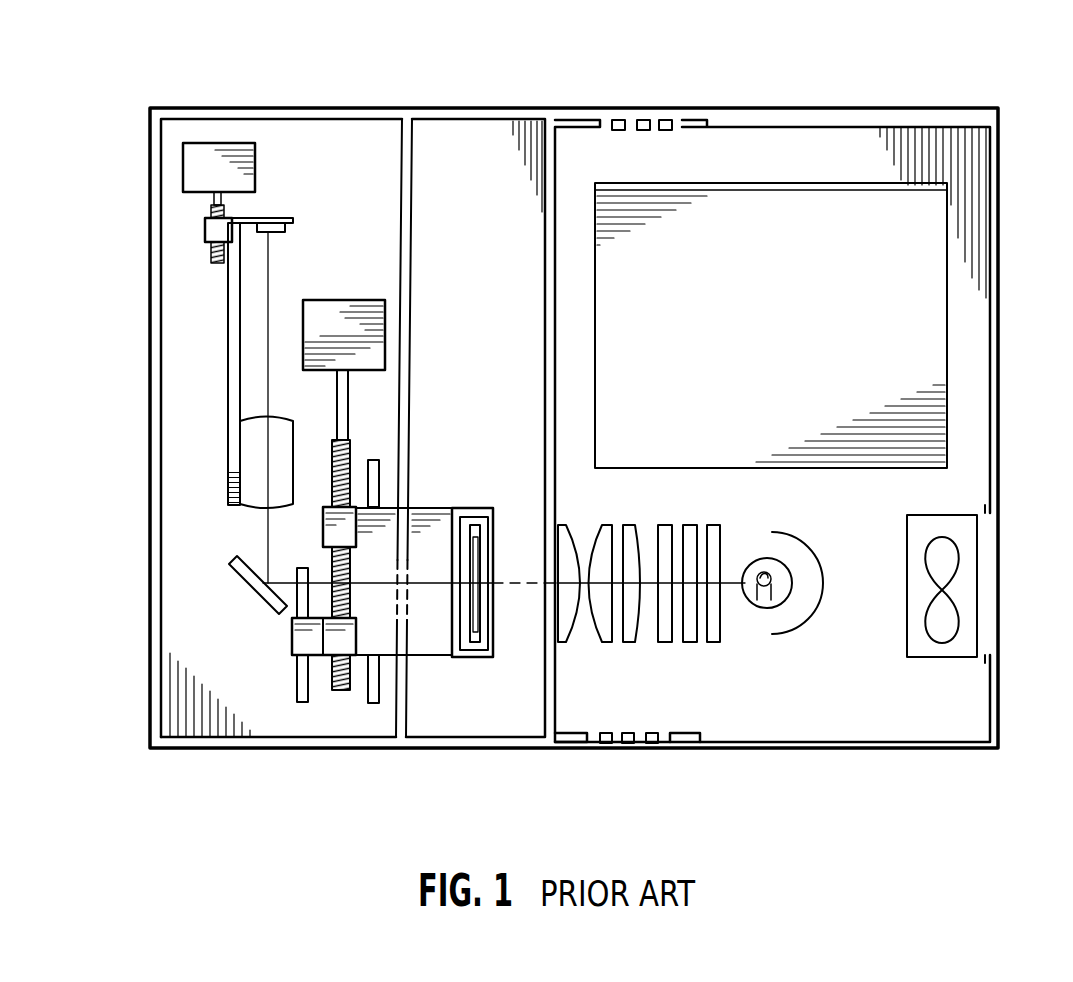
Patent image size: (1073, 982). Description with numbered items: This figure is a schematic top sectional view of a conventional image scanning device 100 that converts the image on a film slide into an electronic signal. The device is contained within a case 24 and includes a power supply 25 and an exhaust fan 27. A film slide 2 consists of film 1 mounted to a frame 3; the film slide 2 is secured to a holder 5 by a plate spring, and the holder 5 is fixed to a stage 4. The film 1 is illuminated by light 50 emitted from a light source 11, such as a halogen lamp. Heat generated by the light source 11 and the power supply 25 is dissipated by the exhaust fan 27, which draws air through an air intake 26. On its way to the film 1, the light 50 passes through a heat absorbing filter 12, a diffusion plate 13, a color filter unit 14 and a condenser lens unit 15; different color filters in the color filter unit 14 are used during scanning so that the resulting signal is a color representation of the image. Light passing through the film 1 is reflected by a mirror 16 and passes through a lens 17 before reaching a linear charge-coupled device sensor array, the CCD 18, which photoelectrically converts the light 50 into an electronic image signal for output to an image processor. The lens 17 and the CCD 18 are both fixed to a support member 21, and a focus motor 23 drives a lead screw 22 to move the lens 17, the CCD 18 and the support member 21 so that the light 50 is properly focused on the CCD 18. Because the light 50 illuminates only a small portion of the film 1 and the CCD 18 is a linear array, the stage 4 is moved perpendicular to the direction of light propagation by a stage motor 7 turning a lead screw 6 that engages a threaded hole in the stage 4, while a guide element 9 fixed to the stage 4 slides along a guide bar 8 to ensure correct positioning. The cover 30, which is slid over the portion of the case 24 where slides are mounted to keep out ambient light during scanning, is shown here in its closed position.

The image scanning device 100 is at (138, 72).
The film 1 is at (477, 548).
The film slide 2 is at (478, 660).
The frame 3 is at (478, 632).
The stage 4 is at (418, 657).
The holder 5 is at (462, 658).
The lead screw 6 is at (336, 692).
The stage motor 7 is at (341, 308).
The guide bar 8 is at (301, 704).
The guide element 9 is at (294, 648).
The light source 11 is at (807, 613).
The heat absorbing filter 12 is at (714, 643).
The diffusion plate 13 is at (690, 643).
The color filter unit 14 is at (665, 643).
The condenser lens unit 15 is at (558, 650).
The mirror 16 is at (247, 590).
The lens 17 is at (236, 471).
The linear charge-coupled device sensor array (CCD) 18 is at (296, 229).
The support member 21 is at (225, 370).
The lead screw 22 is at (215, 253).
The focus motor 23 is at (193, 170).
The case 24 is at (776, 108).
The power supply 25 is at (863, 195).
The air intake 26 is at (628, 748).
The exhaust fan 27 is at (950, 558).
The cover 30 is at (507, 117).
The light 50 is at (711, 641).